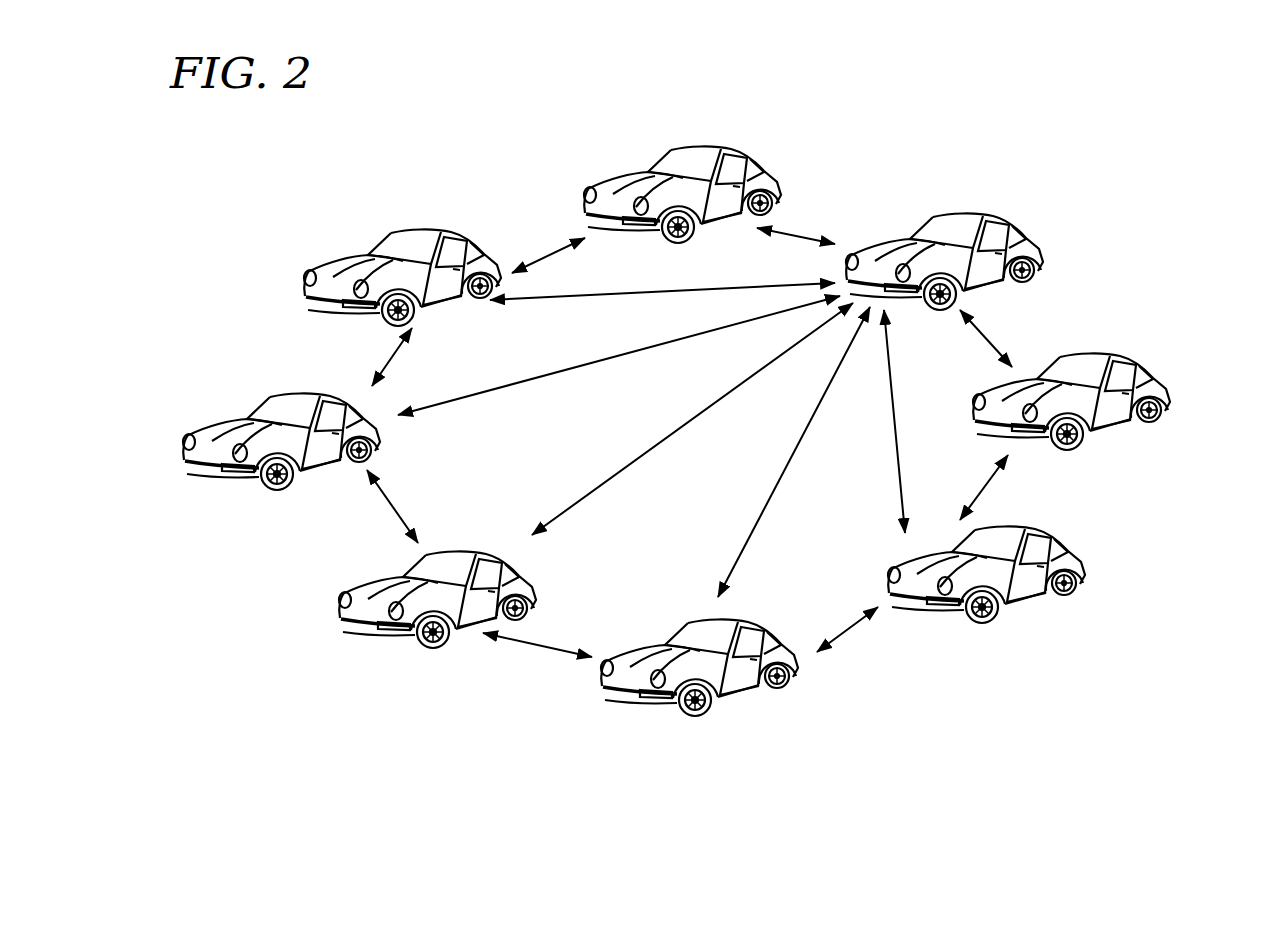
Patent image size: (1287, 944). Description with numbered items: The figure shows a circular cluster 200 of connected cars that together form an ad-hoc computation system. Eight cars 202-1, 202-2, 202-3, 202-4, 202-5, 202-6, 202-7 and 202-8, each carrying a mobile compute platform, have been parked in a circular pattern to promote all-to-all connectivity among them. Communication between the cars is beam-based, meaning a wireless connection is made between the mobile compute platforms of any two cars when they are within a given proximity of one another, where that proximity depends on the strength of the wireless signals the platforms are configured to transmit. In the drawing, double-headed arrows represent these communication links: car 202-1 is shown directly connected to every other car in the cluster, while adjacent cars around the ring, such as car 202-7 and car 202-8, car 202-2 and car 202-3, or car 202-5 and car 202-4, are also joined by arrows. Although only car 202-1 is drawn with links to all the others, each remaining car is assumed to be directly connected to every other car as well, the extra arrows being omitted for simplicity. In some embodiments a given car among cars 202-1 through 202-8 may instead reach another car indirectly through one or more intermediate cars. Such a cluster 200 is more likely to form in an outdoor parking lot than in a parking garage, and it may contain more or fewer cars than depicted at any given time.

The cluster 200 is at (261, 137).
The car 202-1 is at (1029, 239).
The car 202-2 is at (1163, 380).
The car 202-3 is at (1077, 552).
The car 202-4 is at (734, 692).
The car 202-5 is at (343, 621).
The car 202-6 is at (186, 466).
The car 202-7 is at (303, 298).
The car 202-8 is at (596, 183).